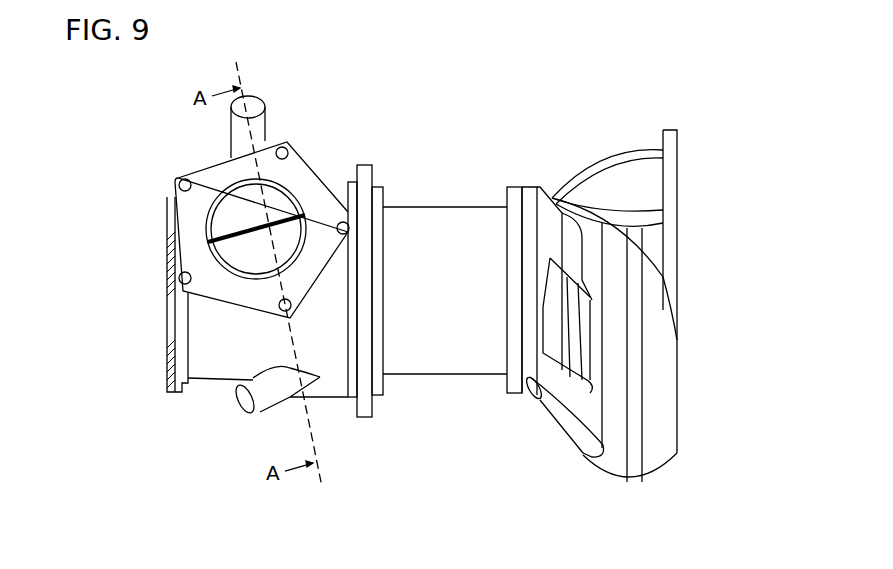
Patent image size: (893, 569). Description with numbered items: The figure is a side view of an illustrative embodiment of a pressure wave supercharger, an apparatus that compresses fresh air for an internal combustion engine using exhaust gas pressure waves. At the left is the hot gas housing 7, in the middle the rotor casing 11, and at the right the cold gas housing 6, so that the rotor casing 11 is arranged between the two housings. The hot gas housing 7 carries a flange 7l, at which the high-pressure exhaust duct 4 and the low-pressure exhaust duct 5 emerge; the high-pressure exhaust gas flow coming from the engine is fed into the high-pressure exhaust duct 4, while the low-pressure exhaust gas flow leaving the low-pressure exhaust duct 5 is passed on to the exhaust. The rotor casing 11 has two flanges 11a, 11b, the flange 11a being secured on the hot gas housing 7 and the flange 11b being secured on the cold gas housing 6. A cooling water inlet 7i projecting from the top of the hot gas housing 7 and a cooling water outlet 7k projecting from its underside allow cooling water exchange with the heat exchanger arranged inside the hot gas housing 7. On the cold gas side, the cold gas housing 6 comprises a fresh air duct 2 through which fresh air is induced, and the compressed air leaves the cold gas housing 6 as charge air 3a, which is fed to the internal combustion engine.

The fresh air duct 2 is at (672, 178).
The charge air 3a is at (658, 463).
The high-pressure exhaust duct 4 is at (233, 214).
The low-pressure exhaust duct 5 is at (230, 252).
The cold gas housing 6 is at (672, 408).
The hot gas housing 7 is at (203, 337).
The cooling water inlet 7i is at (266, 131).
The cooling water outlet 7k is at (260, 393).
The flange 7l is at (303, 177).
The rotor casing 11 is at (447, 223).
The flange 11a is at (375, 203).
The flange 11b is at (513, 207).